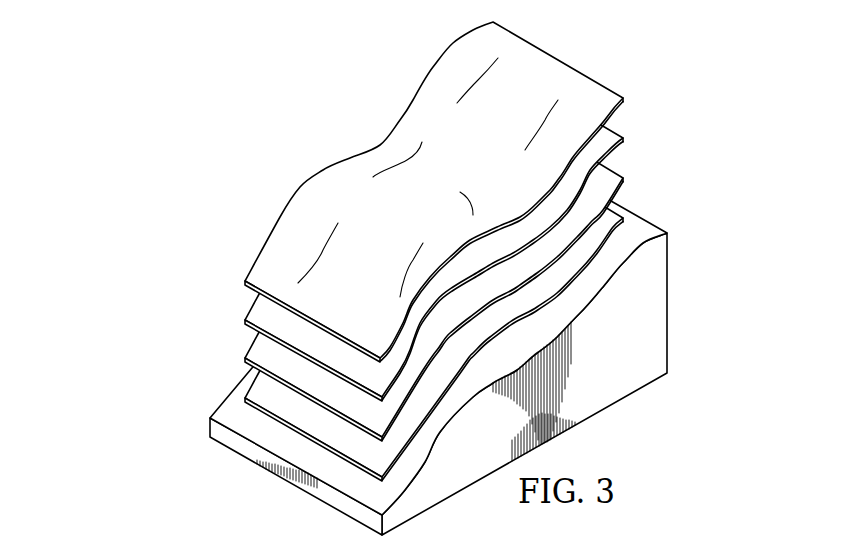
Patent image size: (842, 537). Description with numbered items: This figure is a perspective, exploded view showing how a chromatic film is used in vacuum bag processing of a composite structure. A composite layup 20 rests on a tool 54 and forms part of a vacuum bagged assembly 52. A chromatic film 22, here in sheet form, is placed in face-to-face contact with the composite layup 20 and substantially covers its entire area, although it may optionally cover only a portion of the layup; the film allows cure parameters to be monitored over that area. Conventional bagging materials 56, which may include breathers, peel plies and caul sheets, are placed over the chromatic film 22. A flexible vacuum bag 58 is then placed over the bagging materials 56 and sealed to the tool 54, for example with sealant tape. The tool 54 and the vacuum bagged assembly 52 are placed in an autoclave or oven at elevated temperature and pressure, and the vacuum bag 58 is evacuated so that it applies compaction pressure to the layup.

The vacuum bagged assembly 52 is at (461, 278).
The tool 54 is at (668, 303).
The composite layup 20 is at (258, 397).
The chromatic film 22 is at (258, 358).
The bagging materials 56 is at (258, 318).
The flexible vacuum bag 58 is at (343, 173).